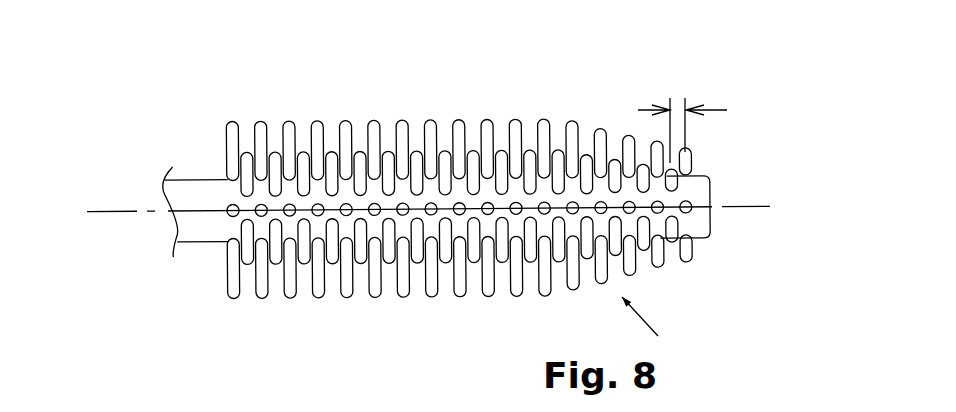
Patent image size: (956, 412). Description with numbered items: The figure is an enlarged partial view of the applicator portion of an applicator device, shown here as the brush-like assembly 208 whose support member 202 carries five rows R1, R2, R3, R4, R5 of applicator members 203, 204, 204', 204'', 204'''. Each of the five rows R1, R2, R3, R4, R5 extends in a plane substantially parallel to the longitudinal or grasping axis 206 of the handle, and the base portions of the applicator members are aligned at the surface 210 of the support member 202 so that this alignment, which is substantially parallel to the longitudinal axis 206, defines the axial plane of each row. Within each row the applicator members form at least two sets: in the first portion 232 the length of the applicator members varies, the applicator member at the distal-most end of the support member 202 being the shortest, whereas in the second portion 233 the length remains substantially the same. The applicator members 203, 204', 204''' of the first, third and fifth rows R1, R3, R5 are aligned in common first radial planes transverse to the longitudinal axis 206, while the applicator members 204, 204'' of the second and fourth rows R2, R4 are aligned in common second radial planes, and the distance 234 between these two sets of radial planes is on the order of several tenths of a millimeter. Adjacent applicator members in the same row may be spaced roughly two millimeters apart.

The support member 202 is at (712, 186).
The applicator member 203 is at (712, 208).
The applicator member 204 is at (727, 170).
The applicator member 204' is at (738, 146).
The applicator member 204'' is at (691, 265).
The applicator member 204''' is at (741, 256).
The longitudinal axis 206 is at (135, 212).
The brush 208 is at (658, 336).
The surface of the support member 210 is at (475, 213).
The first portion 232 is at (540, 87).
The second portion 233 is at (227, 90).
The distance 234 is at (727, 108).
The first row R1 is at (216, 200).
The second row R2 is at (240, 162).
The third row R3 is at (228, 122).
The fourth row R4 is at (240, 252).
The fifth row R5 is at (230, 292).